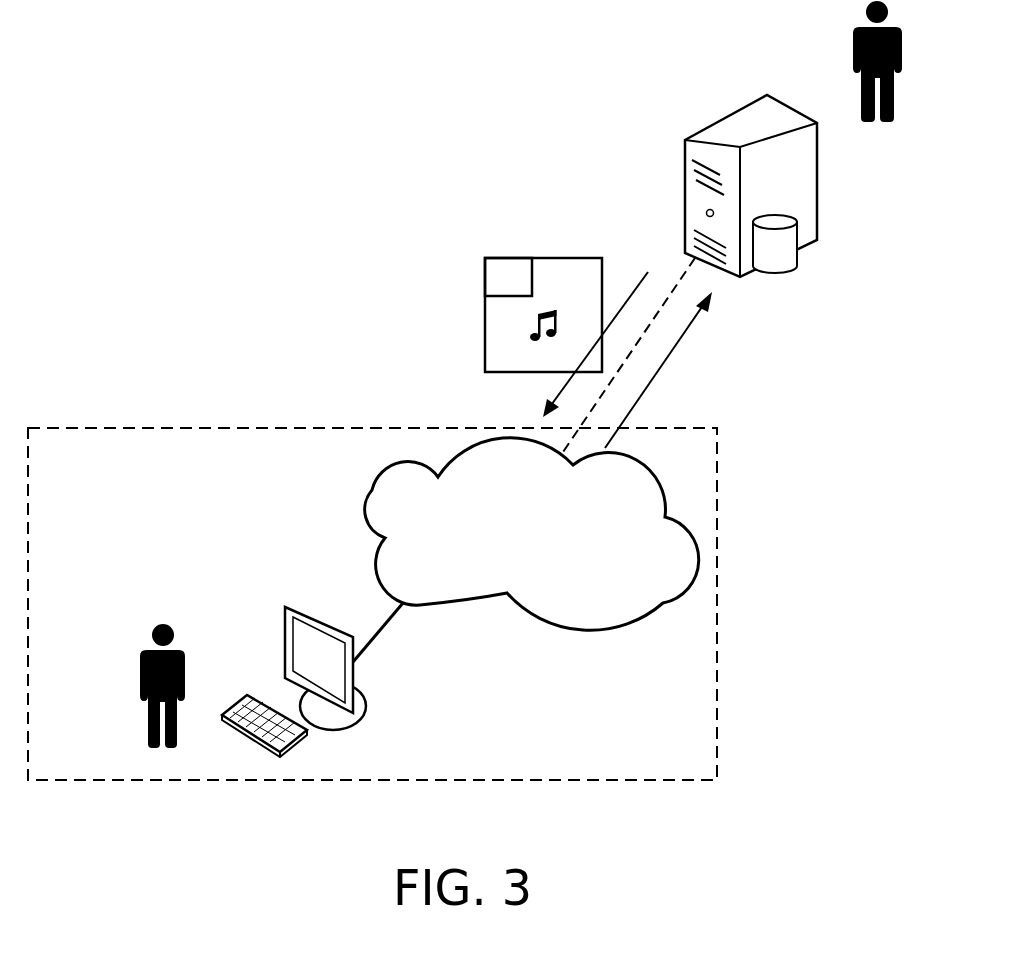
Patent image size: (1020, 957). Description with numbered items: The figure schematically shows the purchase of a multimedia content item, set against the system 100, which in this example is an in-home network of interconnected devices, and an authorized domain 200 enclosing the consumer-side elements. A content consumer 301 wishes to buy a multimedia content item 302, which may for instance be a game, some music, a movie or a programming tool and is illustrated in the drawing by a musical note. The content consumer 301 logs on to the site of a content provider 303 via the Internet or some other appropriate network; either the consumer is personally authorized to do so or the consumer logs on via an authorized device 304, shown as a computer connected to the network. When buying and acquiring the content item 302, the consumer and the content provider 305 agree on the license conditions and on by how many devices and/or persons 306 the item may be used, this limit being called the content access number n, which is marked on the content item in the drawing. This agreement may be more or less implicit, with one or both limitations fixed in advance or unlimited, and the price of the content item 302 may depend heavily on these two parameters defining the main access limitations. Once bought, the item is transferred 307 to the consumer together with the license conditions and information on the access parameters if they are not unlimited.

The system 100 is at (367, 493).
The authorized domain 200 is at (213, 427).
The content consumer 301 is at (138, 653).
The multimedia content item 302 is at (485, 342).
The content provider 303 is at (818, 202).
The authorized device 304 is at (283, 613).
The content provider 305 is at (855, 55).
The number of devices and/or persons 306 is at (497, 273).
The transfer 307 is at (557, 393).